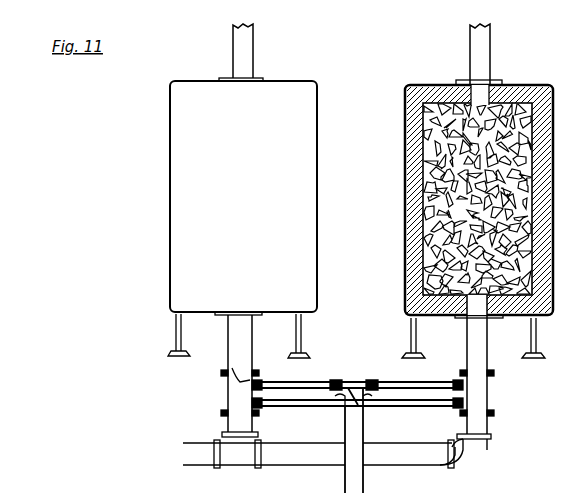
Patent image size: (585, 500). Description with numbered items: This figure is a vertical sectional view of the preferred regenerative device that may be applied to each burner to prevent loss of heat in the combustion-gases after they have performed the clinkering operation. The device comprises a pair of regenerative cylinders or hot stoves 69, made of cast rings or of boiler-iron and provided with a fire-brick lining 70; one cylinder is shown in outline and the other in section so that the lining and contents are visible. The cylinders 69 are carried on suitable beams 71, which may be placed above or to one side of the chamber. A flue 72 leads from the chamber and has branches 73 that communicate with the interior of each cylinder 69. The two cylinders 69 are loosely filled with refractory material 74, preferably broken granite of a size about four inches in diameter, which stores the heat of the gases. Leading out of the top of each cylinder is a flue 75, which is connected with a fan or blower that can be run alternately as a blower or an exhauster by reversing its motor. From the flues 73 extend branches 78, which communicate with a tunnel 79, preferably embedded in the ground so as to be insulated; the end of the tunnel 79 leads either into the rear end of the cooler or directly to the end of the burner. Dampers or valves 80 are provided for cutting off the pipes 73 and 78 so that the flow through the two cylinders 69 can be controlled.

The regenerative cylinder 69 is at (357, 198).
The fire-brick lining 70 is at (418, 144).
The beam 71 is at (363, 336).
The flue 72 is at (361, 443).
The branch 73 is at (368, 364).
The refractory material 74 is at (409, 173).
The flue 75 is at (374, 64).
The branch 78 is at (228, 421).
The tunnel 79 is at (335, 453).
The damper or valve 80 is at (236, 396).